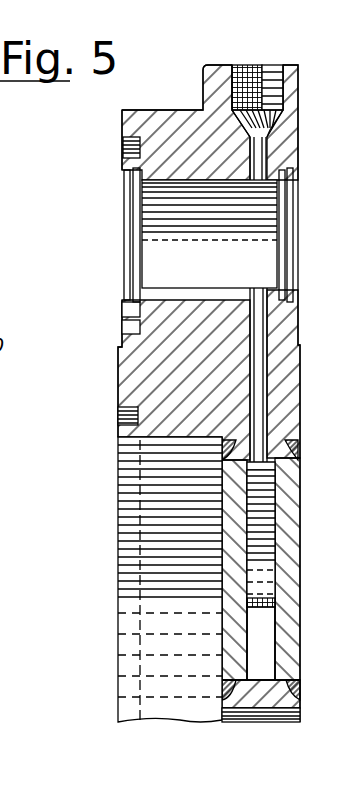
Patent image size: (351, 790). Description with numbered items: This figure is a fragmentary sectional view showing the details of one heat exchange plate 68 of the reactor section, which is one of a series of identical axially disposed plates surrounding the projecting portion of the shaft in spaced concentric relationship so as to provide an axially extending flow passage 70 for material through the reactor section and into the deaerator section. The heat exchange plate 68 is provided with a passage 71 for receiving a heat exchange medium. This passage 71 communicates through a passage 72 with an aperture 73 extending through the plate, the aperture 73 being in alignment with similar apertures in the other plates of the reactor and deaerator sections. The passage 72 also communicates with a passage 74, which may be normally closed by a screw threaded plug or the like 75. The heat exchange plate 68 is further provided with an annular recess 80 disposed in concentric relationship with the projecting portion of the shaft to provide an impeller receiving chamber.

The heat exchange plate 68 is at (177, 102).
The axially extending flow passage 70 is at (300, 716).
The passage 71 is at (272, 548).
The passage 72 is at (262, 375).
The aperture 73 is at (205, 280).
The passage 74 is at (262, 155).
The screw threaded plug 75 is at (265, 66).
The annular recess 80 is at (118, 457).